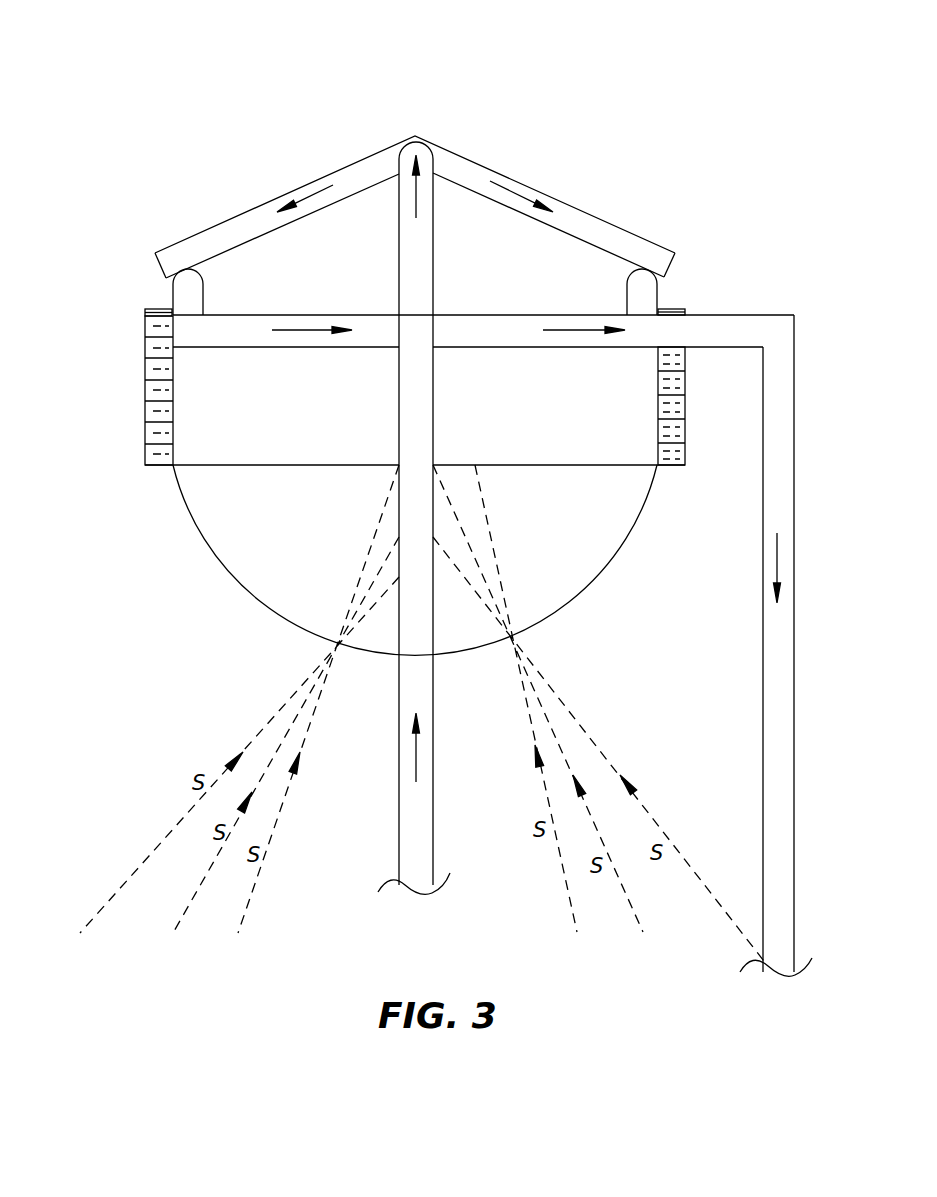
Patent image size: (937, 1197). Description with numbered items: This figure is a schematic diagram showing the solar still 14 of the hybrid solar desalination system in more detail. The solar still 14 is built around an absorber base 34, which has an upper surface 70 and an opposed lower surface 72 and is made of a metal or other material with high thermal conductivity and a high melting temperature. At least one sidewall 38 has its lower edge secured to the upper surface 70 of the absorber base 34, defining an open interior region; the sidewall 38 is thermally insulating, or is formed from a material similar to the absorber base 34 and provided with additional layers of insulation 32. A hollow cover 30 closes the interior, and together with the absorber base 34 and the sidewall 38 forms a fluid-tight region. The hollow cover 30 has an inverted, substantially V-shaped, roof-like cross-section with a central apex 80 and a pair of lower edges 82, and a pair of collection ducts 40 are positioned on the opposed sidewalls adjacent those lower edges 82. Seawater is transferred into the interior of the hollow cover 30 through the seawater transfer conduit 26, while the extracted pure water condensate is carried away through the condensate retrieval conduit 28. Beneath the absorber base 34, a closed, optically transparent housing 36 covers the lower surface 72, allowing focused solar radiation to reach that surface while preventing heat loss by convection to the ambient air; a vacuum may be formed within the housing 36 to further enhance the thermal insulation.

The solar still 14 is at (163, 60).
The seawater transfer conduit 26 is at (433, 818).
The condensate retrieval conduit 28 is at (794, 700).
The hollow cover 30 is at (580, 208).
The insulation 32 is at (145, 400).
The absorber base 34 is at (228, 465).
The optically transparent housing 36 is at (265, 604).
The sidewall 38 is at (146, 313).
The collection duct 40 is at (172, 295).
The upper surface 70 is at (277, 463).
The lower surface 72 is at (573, 465).
The central apex 80 is at (413, 110).
The lower edge 82 is at (243, 244).